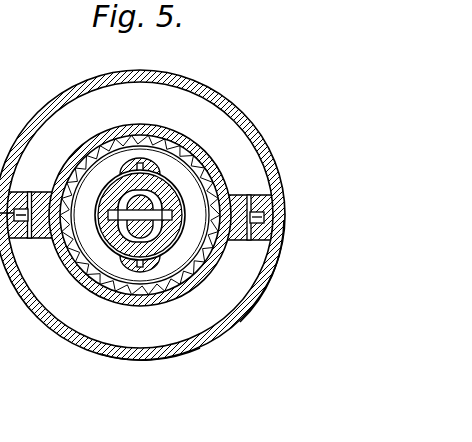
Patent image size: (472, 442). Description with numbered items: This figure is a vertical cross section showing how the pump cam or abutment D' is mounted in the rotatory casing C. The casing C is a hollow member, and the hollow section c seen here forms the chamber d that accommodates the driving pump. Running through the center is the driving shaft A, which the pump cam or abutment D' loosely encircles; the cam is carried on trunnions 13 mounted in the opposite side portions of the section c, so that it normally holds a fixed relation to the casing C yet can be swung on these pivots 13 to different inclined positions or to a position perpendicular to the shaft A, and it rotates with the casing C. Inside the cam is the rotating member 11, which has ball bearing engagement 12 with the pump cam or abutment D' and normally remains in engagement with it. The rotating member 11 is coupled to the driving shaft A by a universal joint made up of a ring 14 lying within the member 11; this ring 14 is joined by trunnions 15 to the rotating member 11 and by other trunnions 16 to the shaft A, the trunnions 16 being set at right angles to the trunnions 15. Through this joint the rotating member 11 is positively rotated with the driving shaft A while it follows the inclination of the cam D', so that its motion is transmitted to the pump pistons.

The casing C is at (142, 201).
The hollow section of casing c is at (148, 362).
The chamber d is at (237, 322).
The pump cam or abutment D' is at (140, 232).
The rotating member 11 is at (172, 168).
The ball bearing engagement 12 is at (72, 262).
The trunnions 13 is at (264, 216).
The ring 14 is at (79, 263).
The trunnions 15 is at (131, 275).
The trunnions 16 is at (188, 194).
The driving shaft A is at (155, 236).